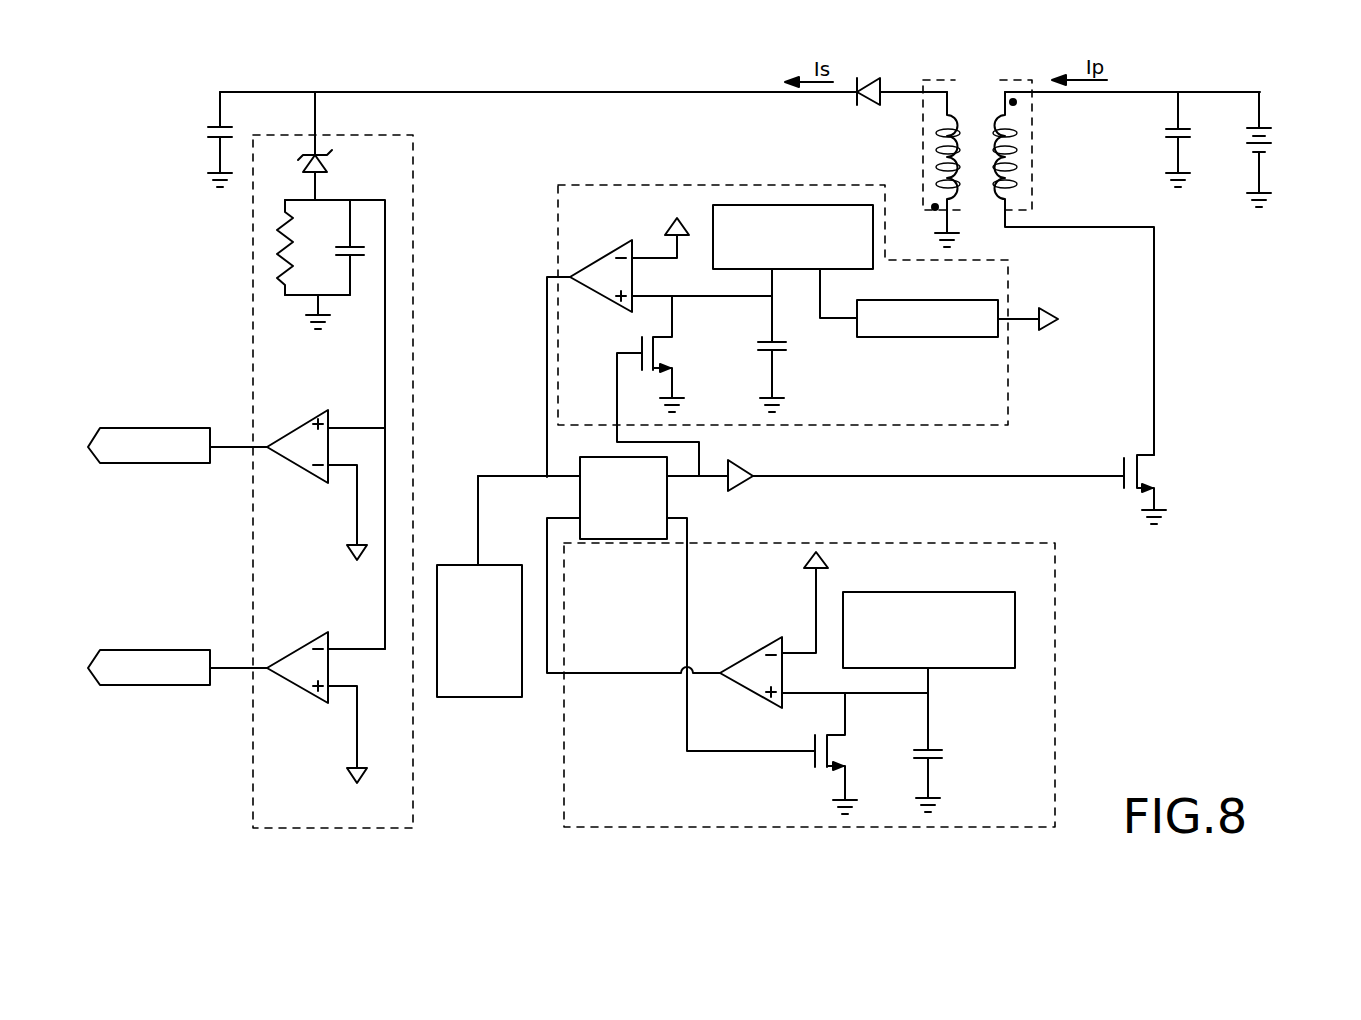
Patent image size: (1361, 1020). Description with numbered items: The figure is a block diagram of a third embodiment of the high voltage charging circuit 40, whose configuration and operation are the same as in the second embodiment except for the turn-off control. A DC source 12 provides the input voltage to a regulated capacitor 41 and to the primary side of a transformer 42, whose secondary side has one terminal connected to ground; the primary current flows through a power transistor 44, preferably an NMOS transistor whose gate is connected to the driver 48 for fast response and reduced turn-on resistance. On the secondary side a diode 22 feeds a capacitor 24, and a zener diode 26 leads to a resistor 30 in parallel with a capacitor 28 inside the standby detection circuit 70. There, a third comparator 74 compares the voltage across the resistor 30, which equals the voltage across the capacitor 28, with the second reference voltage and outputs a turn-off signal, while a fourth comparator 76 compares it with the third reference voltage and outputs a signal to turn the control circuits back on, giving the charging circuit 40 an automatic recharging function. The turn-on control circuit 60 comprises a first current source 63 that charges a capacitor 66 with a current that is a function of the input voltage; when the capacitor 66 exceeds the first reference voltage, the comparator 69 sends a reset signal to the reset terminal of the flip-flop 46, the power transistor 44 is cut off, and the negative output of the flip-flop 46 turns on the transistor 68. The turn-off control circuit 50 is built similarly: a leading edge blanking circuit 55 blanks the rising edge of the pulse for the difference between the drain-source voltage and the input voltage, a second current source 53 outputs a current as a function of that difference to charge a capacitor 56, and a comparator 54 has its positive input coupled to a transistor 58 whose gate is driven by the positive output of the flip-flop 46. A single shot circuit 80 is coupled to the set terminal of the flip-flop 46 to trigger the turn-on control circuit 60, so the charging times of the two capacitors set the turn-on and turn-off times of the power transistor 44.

The DC source 12 is at (1268, 143).
The diode 22 is at (872, 76).
The capacitor 24 is at (212, 130).
The zener diode 26 is at (330, 160).
The capacitor 28 is at (362, 243).
The resistor 30 is at (275, 258).
The high voltage charging circuit 40 is at (1313, 77).
The capacitor 41 is at (1185, 140).
The transformer 42 is at (982, 95).
The power transistor 44 is at (1158, 477).
The flip-flop 46 is at (578, 490).
The driver 48 is at (758, 463).
The turn-off control circuit 50 is at (1008, 375).
The second current source 53 is at (795, 205).
The comparator 54 is at (618, 240).
The leading edge blanking circuit 55 is at (916, 340).
The capacitor 56 is at (790, 345).
The transistor 58 is at (637, 350).
The turn-on control circuit 60 is at (1058, 625).
The first current source 63 is at (993, 670).
The capacitor 66 is at (938, 757).
The transistor 68 is at (819, 770).
The comparator 69 is at (758, 656).
The standby detection circuit 70 is at (252, 348).
The third comparator 74 is at (317, 472).
The fourth comparator 76 is at (317, 694).
The single shot circuit 80 is at (490, 700).